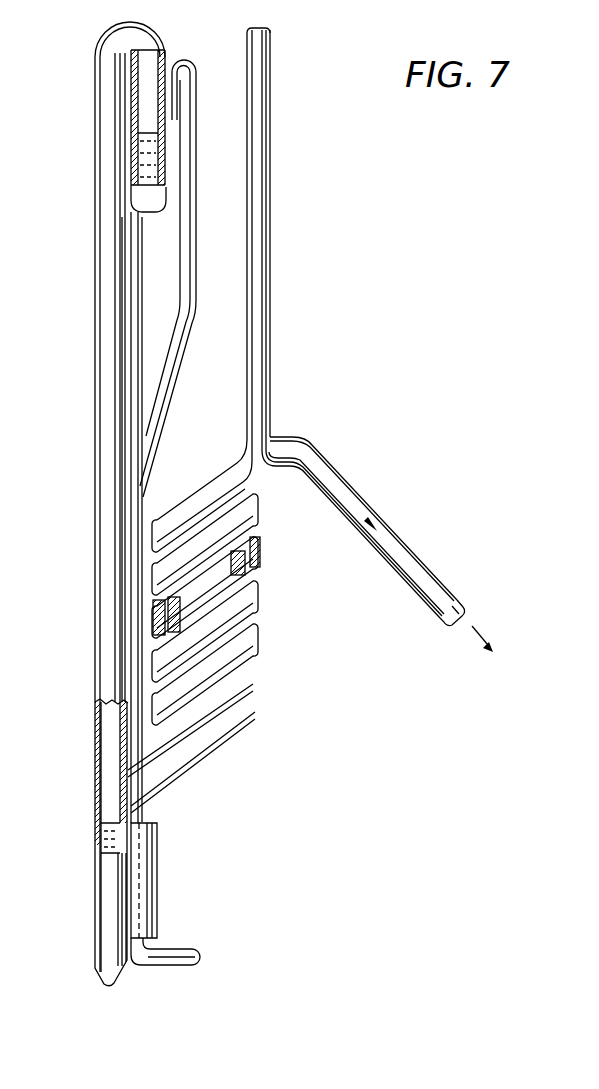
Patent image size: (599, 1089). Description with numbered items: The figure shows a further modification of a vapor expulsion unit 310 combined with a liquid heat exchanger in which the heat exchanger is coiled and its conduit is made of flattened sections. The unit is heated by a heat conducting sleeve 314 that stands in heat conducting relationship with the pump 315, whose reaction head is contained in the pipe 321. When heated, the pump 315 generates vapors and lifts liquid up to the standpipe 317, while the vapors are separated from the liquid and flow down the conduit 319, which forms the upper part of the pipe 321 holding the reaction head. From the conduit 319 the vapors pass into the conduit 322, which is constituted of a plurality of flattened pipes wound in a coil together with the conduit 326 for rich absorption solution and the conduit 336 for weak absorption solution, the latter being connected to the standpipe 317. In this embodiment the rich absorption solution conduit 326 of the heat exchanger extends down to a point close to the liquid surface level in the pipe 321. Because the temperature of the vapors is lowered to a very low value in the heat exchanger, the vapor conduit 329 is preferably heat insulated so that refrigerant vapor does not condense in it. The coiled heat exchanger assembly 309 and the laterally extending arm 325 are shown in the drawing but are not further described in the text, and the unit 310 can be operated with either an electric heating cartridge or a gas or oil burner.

The vapor expulsion unit 310 is at (84, 504).
The standpipe 317 is at (138, 278).
The conduit 319 is at (107, 382).
The pump 315 is at (193, 318).
The vapor conduit 329 is at (271, 364).
The arm 325 is at (433, 576).
The coil assembly 309 is at (287, 651).
The conduit 322 is at (258, 541).
The conduit for rich absorption solution 326 is at (258, 576).
The conduit for weak absorption solution 336 is at (233, 601).
The pipe 321 is at (113, 886).
The heat conducting sleeve 314 is at (160, 869).